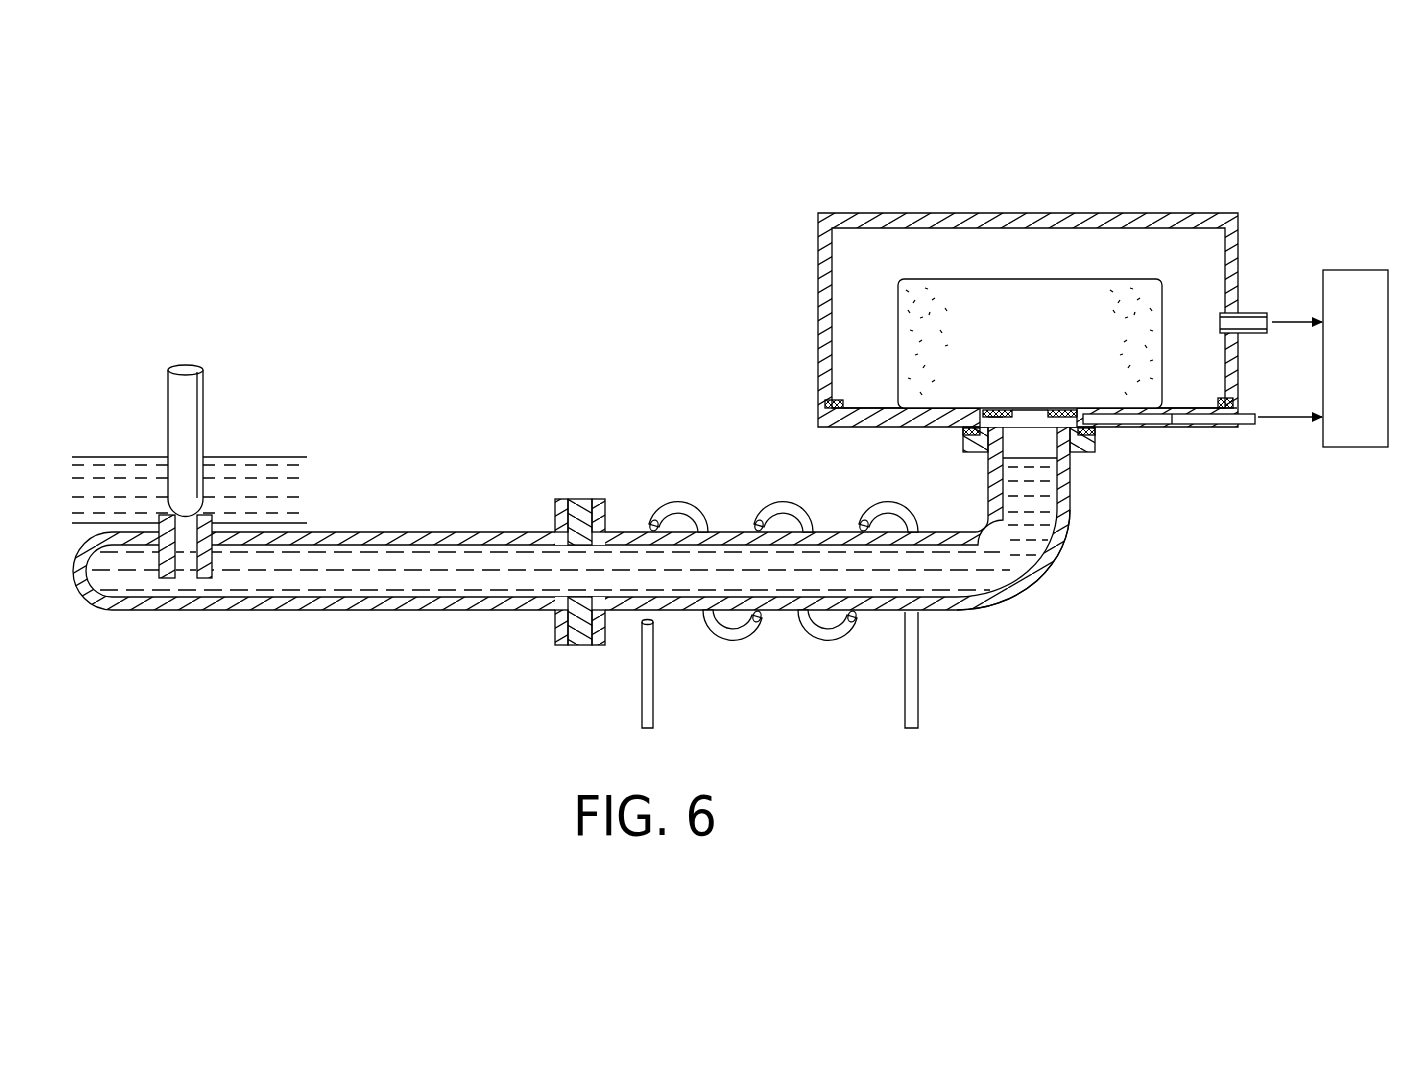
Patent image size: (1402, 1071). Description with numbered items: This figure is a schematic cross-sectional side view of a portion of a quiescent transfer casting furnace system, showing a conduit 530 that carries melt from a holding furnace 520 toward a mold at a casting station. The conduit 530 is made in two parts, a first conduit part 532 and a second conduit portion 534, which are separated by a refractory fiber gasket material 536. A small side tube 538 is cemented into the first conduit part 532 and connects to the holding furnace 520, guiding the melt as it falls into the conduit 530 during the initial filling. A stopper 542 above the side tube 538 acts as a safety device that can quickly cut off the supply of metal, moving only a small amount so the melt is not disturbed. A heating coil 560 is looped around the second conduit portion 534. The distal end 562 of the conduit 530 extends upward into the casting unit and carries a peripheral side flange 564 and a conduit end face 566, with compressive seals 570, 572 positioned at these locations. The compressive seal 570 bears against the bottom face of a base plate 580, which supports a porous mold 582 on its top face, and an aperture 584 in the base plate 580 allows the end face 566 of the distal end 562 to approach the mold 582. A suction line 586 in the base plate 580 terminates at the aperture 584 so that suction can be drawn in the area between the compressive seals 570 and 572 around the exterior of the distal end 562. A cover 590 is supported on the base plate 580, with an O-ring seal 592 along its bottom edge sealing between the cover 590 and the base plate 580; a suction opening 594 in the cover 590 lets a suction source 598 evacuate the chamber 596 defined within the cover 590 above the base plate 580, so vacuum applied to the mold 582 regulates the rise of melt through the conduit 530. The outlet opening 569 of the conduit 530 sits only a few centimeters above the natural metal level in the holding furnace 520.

The holding furnace 520 is at (250, 440).
The conduit 530 is at (417, 500).
The first conduit part 532 is at (262, 600).
The second conduit portion 534 is at (980, 603).
The refractory fiber gasket material 536 is at (585, 505).
The side tube 538 is at (163, 565).
The stopper 542 is at (178, 410).
The heating coil 560 is at (820, 635).
The distal end 562 is at (1010, 460).
The peripheral side flange 564 is at (1080, 445).
The conduit end face 566 is at (1060, 410).
The outlet opening 569 is at (1030, 415).
The compressive seal 570 is at (975, 432).
The compressive seal 572 is at (998, 408).
The base plate 580 is at (838, 425).
The porous mold 582 is at (1024, 296).
The aperture 584 is at (982, 410).
The suction line 586 is at (1145, 420).
The cover 590 is at (985, 218).
The O-ring seal 592 is at (823, 400).
The suction opening 594 is at (1243, 323).
The chamber 596 is at (1165, 245).
The suction source 598 is at (1357, 285).